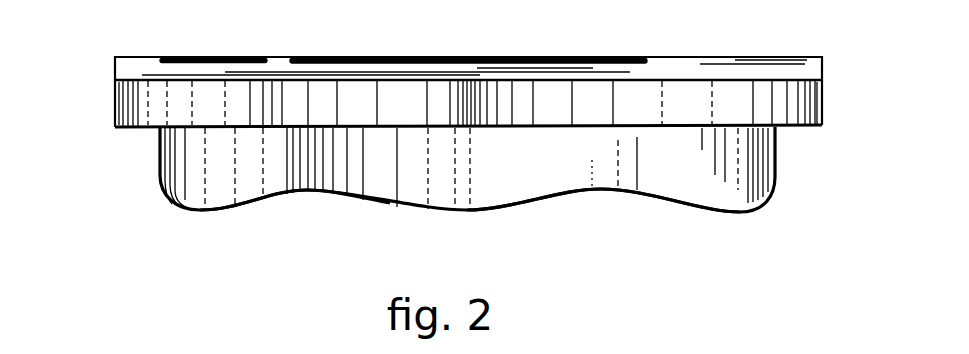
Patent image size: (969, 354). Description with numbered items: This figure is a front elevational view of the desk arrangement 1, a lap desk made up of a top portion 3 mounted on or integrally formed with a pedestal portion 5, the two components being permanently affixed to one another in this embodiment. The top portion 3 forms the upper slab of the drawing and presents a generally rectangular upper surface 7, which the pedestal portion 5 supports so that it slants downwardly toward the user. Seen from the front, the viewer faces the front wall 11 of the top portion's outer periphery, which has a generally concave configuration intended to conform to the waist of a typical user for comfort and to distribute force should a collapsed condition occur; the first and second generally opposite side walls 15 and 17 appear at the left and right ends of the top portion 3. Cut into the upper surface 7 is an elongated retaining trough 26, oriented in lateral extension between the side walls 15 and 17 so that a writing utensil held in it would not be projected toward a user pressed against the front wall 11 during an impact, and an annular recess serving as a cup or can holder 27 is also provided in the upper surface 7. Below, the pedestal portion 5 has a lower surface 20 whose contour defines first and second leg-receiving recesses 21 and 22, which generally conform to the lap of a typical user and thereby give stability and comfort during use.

The desk arrangement 1 is at (126, 57).
The top portion 3 is at (823, 81).
The pedestal portion 5 is at (778, 171).
The upper surface 7 is at (777, 67).
The front wall 11 is at (641, 100).
The first side wall 15 is at (115, 96).
The second side wall 17 is at (823, 103).
The lower surface 20 is at (541, 200).
The first leg-receiving recess 21 is at (328, 192).
The second leg-receiving recess 22 is at (618, 195).
The elongated retaining trough 26 is at (445, 57).
The cup or can holder 27 is at (193, 57).